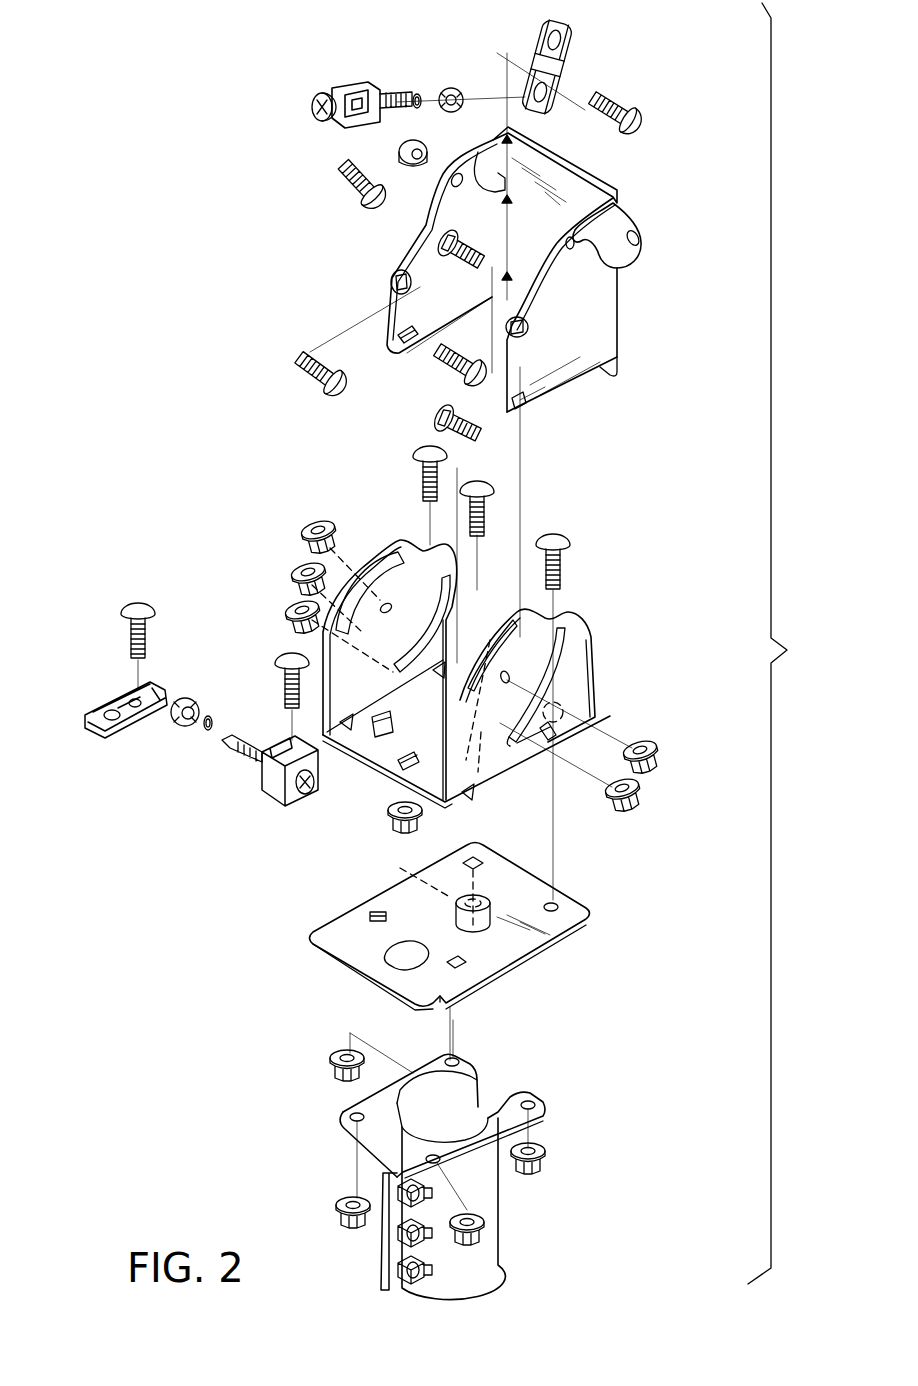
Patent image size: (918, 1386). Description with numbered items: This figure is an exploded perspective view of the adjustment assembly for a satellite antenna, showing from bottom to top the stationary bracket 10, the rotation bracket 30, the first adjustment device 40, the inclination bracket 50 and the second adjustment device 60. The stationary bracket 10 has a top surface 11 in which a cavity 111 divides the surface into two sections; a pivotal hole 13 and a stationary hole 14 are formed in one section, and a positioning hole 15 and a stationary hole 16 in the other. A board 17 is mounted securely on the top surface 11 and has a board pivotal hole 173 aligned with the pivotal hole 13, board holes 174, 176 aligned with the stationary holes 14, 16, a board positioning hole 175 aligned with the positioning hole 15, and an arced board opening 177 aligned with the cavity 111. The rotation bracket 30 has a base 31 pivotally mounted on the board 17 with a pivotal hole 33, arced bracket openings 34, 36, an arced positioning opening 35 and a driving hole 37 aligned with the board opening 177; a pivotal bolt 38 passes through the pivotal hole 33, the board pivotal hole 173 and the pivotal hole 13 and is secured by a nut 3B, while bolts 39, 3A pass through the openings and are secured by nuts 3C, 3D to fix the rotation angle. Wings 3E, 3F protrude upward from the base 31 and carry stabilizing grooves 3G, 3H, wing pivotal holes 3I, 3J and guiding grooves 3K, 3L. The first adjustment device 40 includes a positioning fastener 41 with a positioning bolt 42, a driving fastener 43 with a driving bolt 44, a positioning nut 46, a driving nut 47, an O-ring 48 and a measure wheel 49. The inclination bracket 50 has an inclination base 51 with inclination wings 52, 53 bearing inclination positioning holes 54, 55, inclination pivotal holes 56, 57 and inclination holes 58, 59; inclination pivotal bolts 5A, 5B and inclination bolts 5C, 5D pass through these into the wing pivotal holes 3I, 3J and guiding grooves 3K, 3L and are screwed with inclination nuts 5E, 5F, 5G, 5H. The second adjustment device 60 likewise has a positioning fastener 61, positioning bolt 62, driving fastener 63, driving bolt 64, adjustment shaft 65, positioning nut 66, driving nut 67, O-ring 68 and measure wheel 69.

The stationary bracket 10 is at (610, 1140).
The top surface 11 is at (338, 1098).
The pivotal hole 13 is at (536, 1103).
The stationary hole 14 is at (441, 1162).
The positioning hole 15 is at (348, 1118).
The stationary hole 16 is at (460, 1060).
The board 17 is at (652, 895).
The rotation bracket 30 is at (672, 508).
The base 31 is at (360, 748).
The pivotal hole 33 is at (572, 710).
The bracket opening 34 is at (480, 738).
The positioning opening 35 is at (390, 720).
The bracket opening 36 is at (490, 640).
The driving hole 37 is at (403, 790).
The pivotal bolt 38 is at (560, 572).
The bolt 39 is at (428, 452).
The bolt 3A is at (486, 490).
The nut 3B is at (542, 1172).
The nut 3C is at (480, 1240).
The nut 3D is at (395, 870).
The wing 3E is at (578, 688).
The wing 3F is at (360, 565).
The stabilizing groove 3G is at (548, 642).
The stabilizing groove 3H is at (360, 622).
The wing pivotal hole 3I is at (512, 675).
The wing pivotal hole 3J is at (391, 604).
The guiding groove 3K is at (514, 747).
The guiding groove 3L is at (448, 568).
The first adjustment device 40 is at (88, 683).
The positioning fastener 41 is at (162, 685).
The positioning bolt 42 is at (140, 618).
The driving fastener 43 is at (272, 775).
The driving bolt 44 is at (282, 664).
The positioning nut 46 is at (338, 1200).
The driving nut 47 is at (425, 812).
The O-ring 48 is at (206, 738).
The measure wheel 49 is at (178, 722).
The inclination bracket 50 is at (664, 237).
The inclination base 51 is at (583, 187).
The inclination wing 52 is at (606, 312).
The inclination wing 53 is at (432, 228).
The inclination positioning hole 54 is at (570, 250).
The inclination positioning hole 55 is at (460, 188).
The inclination pivotal hole 56 is at (528, 327).
The inclination pivotal hole 57 is at (392, 280).
The inclination hole 58 is at (521, 402).
The inclination hole 59 is at (395, 330).
The inclination pivotal bolt 5A is at (457, 256).
The inclination pivotal bolt 5B is at (322, 372).
The inclination bolt 5C is at (428, 424).
The inclination bolt 5D is at (447, 376).
The inclination nut 5E is at (654, 746).
The inclination nut 5F is at (303, 530).
The inclination nut 5G is at (638, 784).
The inclination nut 5H is at (287, 606).
The second adjustment device 60 is at (292, 38).
The positioning fastener 61 is at (568, 42).
The positioning bolt 62 is at (640, 118).
The driving fastener 63 is at (340, 92).
The driving bolt 64 is at (343, 190).
The adjustment shaft 65 is at (312, 107).
The positioning nut 66 is at (398, 154).
The driving nut 67 is at (294, 571).
The O-ring 68 is at (417, 94).
The measure wheel 69 is at (455, 88).
The cavity 111 is at (385, 1148).
The board pivotal hole 173 is at (560, 903).
The board hole 174 is at (470, 960).
The board positioning hole 175 is at (372, 915).
The board hole 176 is at (471, 858).
The board opening 177 is at (340, 950).